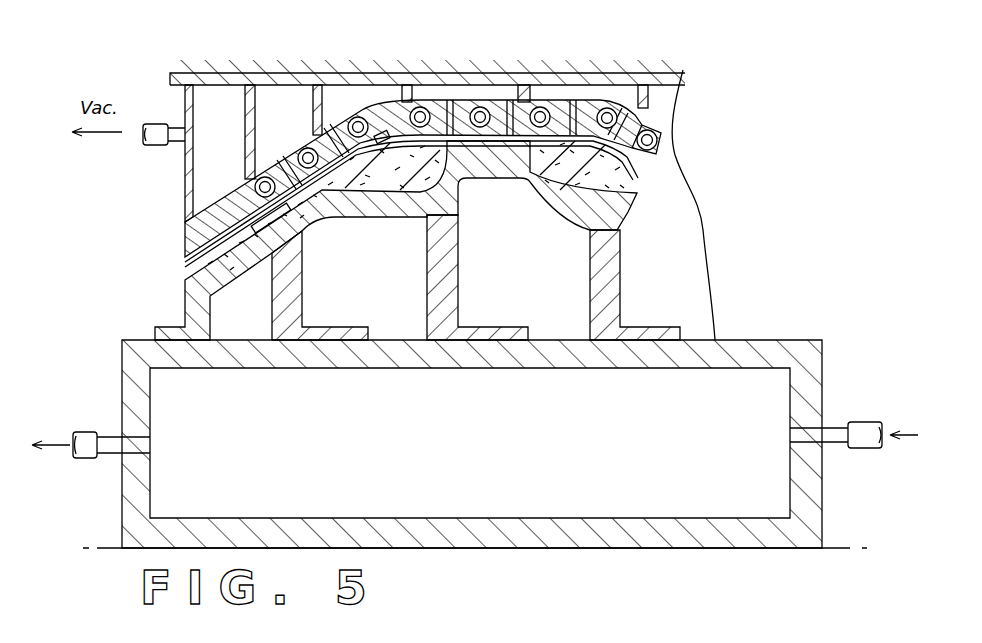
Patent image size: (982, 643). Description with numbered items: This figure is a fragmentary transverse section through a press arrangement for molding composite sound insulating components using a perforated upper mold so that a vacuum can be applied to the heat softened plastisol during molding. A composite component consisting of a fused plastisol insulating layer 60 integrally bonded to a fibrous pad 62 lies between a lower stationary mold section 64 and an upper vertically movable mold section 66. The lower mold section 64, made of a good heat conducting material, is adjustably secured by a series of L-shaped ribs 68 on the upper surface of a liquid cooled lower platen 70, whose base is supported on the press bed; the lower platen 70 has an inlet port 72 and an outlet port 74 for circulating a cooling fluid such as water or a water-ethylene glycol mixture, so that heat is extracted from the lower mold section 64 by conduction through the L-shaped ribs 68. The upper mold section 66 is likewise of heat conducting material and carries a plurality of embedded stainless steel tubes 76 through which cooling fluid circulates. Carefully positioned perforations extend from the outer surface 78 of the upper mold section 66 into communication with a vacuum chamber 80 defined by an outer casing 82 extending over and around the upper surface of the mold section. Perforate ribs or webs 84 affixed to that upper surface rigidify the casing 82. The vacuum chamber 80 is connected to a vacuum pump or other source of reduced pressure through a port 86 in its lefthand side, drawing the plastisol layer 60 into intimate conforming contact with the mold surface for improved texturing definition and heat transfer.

The fused plastisol insulating layer 60 is at (642, 157).
The fibrous pad 62 is at (635, 176).
The lower stationary mold section 64 is at (620, 221).
The upper vertically movable mold section 66 is at (657, 124).
The L-shaped ribs 68 is at (435, 278).
The liquid cooled lower platen 70 is at (818, 383).
The inlet port 72 is at (843, 447).
The outlet port 74 is at (112, 453).
The stainless steel tubes 76 is at (307, 148).
The outer surface 78 is at (381, 141).
The vacuum chamber 80 is at (210, 99).
The outer casing 82 is at (202, 72).
The perforate ribs or webs 84 is at (420, 100).
The port 86 is at (178, 144).